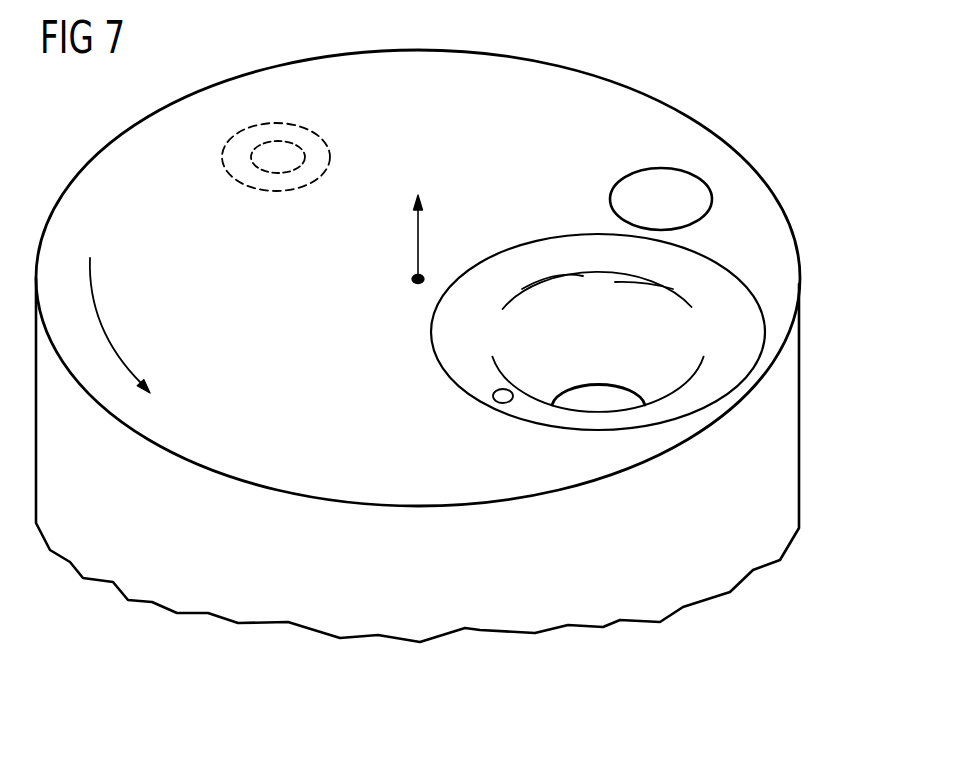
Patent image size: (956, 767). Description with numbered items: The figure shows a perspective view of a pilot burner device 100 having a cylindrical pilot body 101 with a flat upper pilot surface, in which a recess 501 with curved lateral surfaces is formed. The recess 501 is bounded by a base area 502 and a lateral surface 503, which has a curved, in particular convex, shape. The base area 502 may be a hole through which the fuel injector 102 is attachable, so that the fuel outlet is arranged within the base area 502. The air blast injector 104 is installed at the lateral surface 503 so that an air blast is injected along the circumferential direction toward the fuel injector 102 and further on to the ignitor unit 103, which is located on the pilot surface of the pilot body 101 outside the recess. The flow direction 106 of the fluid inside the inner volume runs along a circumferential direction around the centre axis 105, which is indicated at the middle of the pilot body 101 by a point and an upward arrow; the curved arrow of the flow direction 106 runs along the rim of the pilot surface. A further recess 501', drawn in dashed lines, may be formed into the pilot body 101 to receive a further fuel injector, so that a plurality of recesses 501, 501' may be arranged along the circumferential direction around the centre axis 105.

The rotor / turbine disc 100 is at (688, 58).
The pilot body 101 is at (465, 120).
The fuel injector 102 is at (612, 397).
The ignitor unit 103 is at (650, 180).
The air blast injector 104 is at (503, 391).
The centre axis 105 is at (412, 278).
The flow direction 106 is at (95, 313).
The recess 501 is at (597, 254).
The further recess 501' is at (321, 157).
The base area 502 is at (690, 398).
The lateral surface 503 is at (720, 313).